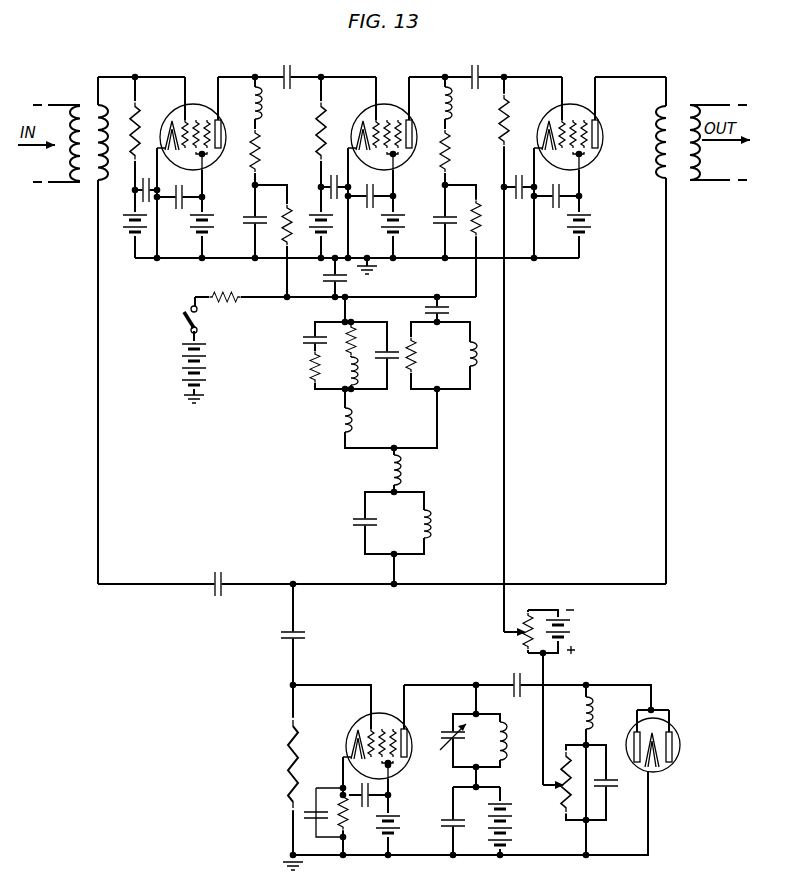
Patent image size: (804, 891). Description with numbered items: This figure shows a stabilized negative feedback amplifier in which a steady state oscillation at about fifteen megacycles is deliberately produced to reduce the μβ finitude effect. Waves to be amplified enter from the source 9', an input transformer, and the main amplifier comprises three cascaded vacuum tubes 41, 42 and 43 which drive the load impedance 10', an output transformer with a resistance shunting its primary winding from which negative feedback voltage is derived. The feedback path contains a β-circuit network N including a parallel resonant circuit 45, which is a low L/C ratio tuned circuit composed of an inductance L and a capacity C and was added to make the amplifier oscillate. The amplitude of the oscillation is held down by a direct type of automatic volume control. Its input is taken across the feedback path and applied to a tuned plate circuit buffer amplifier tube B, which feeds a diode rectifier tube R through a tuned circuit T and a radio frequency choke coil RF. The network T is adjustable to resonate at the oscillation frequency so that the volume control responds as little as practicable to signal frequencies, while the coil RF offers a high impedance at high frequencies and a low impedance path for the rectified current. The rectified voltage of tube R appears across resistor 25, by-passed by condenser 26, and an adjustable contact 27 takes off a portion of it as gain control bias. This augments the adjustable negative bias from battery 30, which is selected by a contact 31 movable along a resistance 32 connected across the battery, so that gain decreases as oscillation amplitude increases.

The source of waves 9' is at (88, 129).
The load circuit or impedance 10' is at (683, 128).
The vacuum tube 41 is at (196, 104).
The vacuum tube 42 is at (389, 104).
The vacuum tube 43 is at (578, 104).
The β-circuit network N is at (389, 370).
The parallel resonant circuit 45 is at (394, 523).
The capacity C is at (352, 522).
The inductance L is at (432, 530).
The buffer amplifier tube B is at (378, 713).
The tuned circuit T is at (458, 728).
The battery 30 is at (574, 630).
The contact 31 is at (516, 634).
The resistance 32 is at (522, 650).
The radio frequency choke coil RF is at (598, 714).
The resistor 25 is at (566, 812).
The condenser 26 is at (612, 790).
The adjustable contact 27 is at (558, 782).
The rectifier tube R is at (676, 737).